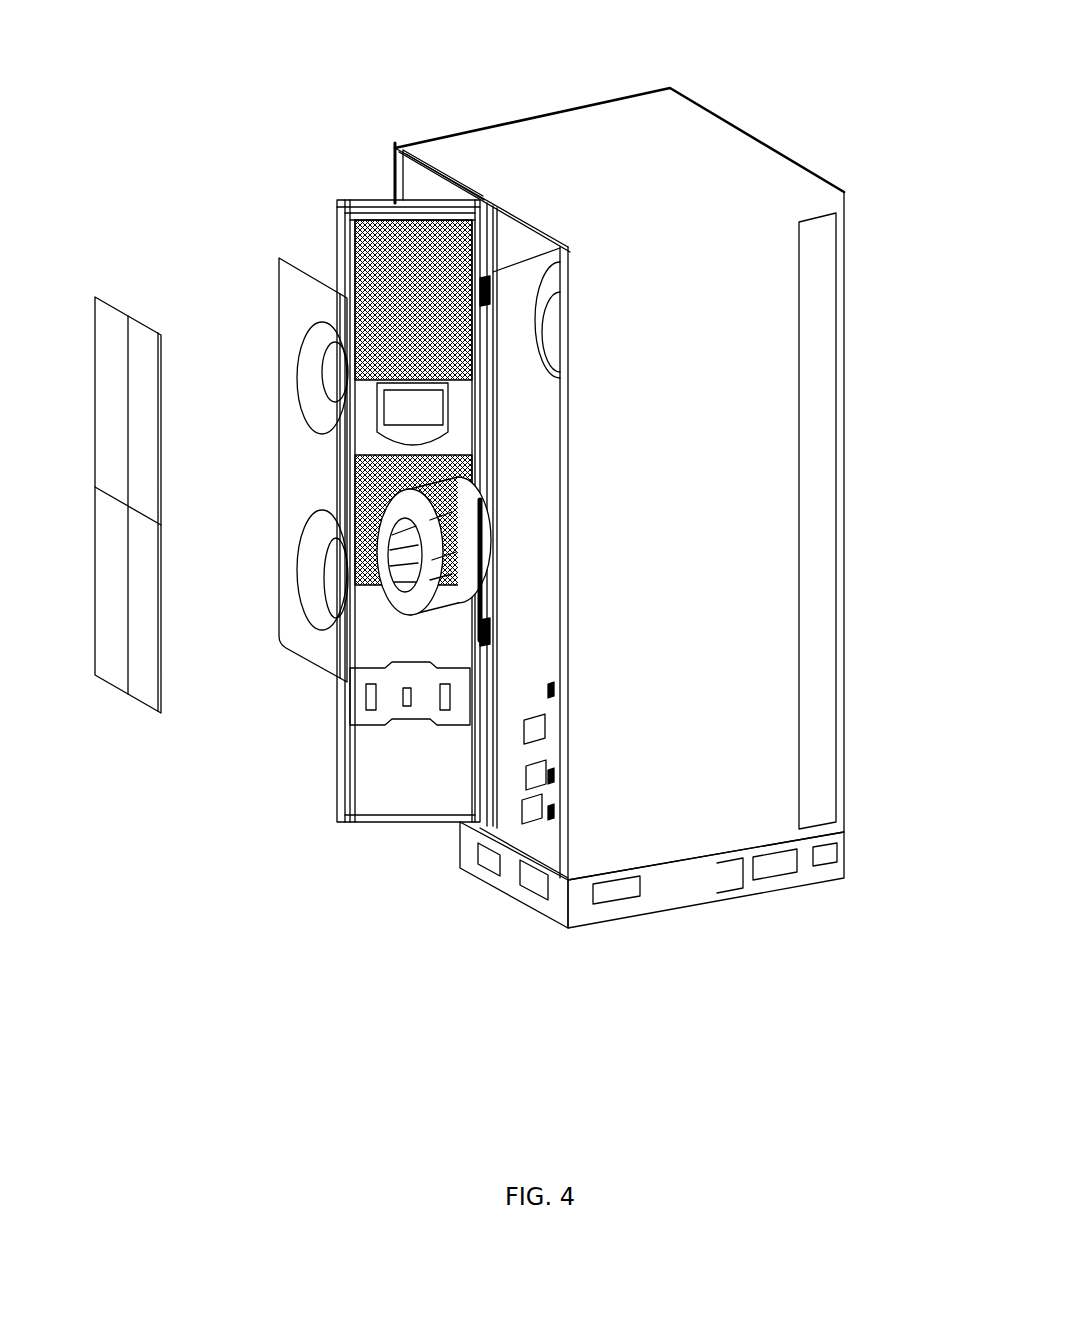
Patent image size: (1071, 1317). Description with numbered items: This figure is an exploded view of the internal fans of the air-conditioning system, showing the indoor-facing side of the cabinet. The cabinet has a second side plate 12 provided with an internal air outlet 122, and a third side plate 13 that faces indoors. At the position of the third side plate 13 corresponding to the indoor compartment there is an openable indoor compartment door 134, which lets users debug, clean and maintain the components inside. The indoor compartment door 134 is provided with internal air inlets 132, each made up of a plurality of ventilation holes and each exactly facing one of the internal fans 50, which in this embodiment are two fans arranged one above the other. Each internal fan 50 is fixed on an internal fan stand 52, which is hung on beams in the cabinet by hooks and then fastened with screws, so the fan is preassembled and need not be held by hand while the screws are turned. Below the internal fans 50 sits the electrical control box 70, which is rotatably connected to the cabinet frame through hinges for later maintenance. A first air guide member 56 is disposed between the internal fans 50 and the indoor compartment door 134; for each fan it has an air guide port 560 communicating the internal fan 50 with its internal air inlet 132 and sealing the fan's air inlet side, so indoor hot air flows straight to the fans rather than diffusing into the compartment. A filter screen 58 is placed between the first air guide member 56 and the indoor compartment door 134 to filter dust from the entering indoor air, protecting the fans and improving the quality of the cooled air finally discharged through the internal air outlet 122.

The second side plate 12 is at (777, 517).
The internal air outlet 122 is at (820, 350).
The third side plate 13 is at (335, 475).
The internal air inlet 132 is at (337, 200).
The indoor compartment door 134 is at (383, 205).
The internal fan 50 is at (430, 600).
The internal fan stand 52 is at (478, 618).
The first air guide member 56 is at (252, 475).
The air guide port 560 is at (333, 352).
The filter screen 58 is at (137, 657).
The electrical control box 70 is at (513, 787).